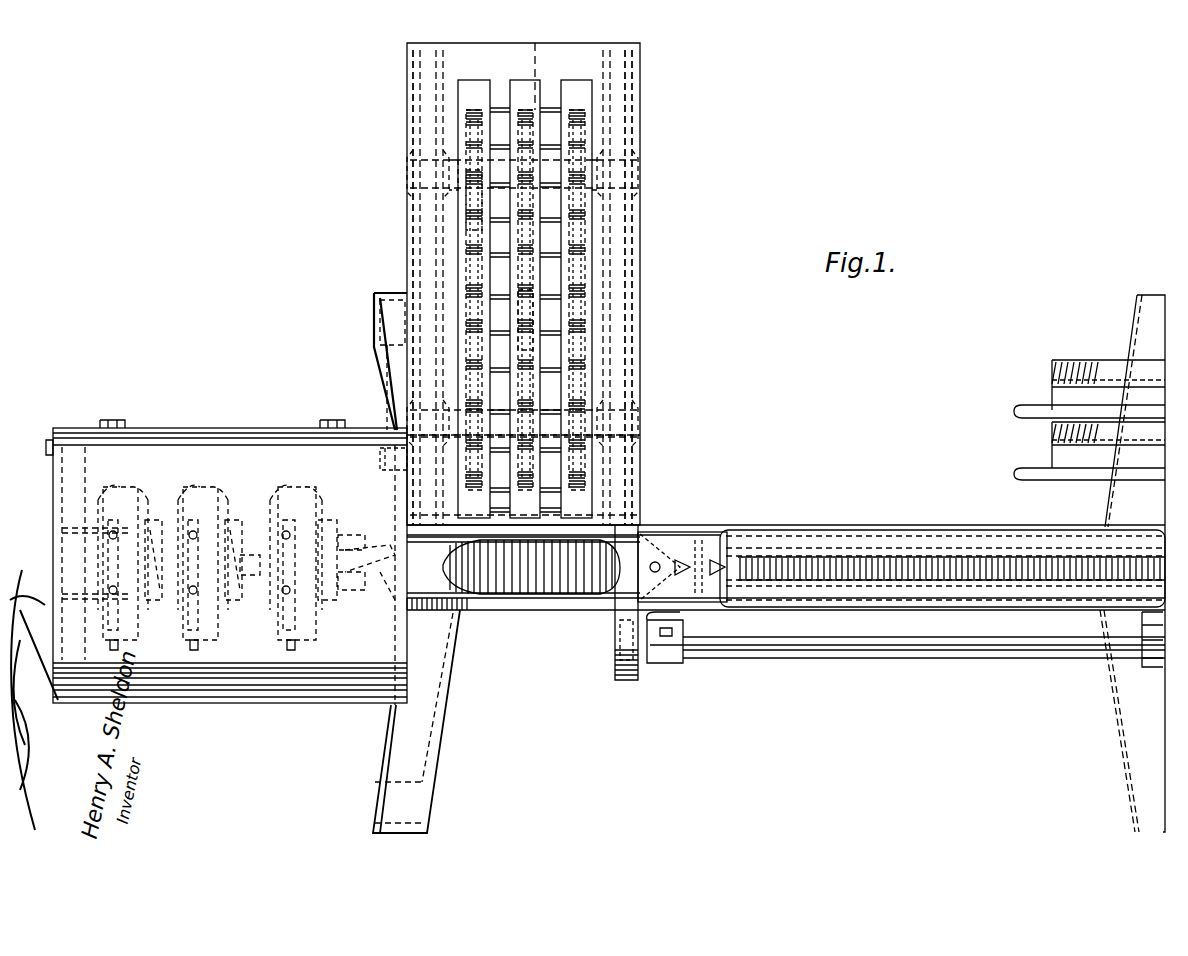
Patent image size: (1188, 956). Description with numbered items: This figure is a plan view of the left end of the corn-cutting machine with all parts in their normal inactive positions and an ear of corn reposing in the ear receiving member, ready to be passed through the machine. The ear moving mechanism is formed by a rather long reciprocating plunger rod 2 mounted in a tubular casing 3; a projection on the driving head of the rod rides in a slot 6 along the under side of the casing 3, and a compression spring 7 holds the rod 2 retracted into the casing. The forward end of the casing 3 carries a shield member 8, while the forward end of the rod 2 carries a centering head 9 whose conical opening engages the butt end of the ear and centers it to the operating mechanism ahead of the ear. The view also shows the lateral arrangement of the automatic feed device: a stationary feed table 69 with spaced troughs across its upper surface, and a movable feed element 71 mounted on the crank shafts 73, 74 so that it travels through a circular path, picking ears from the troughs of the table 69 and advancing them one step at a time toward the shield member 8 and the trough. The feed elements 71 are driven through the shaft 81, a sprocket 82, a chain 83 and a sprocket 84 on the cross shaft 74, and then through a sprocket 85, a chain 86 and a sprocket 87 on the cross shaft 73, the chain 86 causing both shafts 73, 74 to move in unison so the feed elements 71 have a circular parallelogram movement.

The shield member 8 is at (523, 290).
The sprocket 87 is at (410, 168).
The crank shaft 73 is at (630, 170).
The movable feed element 71 is at (583, 218).
The chain 86 is at (410, 262).
The stationary feed table 69 is at (550, 312).
The sprocket 85 is at (410, 410).
The sprocket 84 is at (640, 398).
The slot 6 is at (513, 424).
The crank shaft 74 is at (640, 437).
The chain 83 is at (640, 490).
The centering head 9 is at (672, 533).
The tubular casing 3 is at (531, 600).
The sprocket 82 is at (620, 650).
The shaft 81 is at (892, 653).
The reciprocating plunger rod 2 is at (602, 563).
The compression spring 7 is at (115, 725).